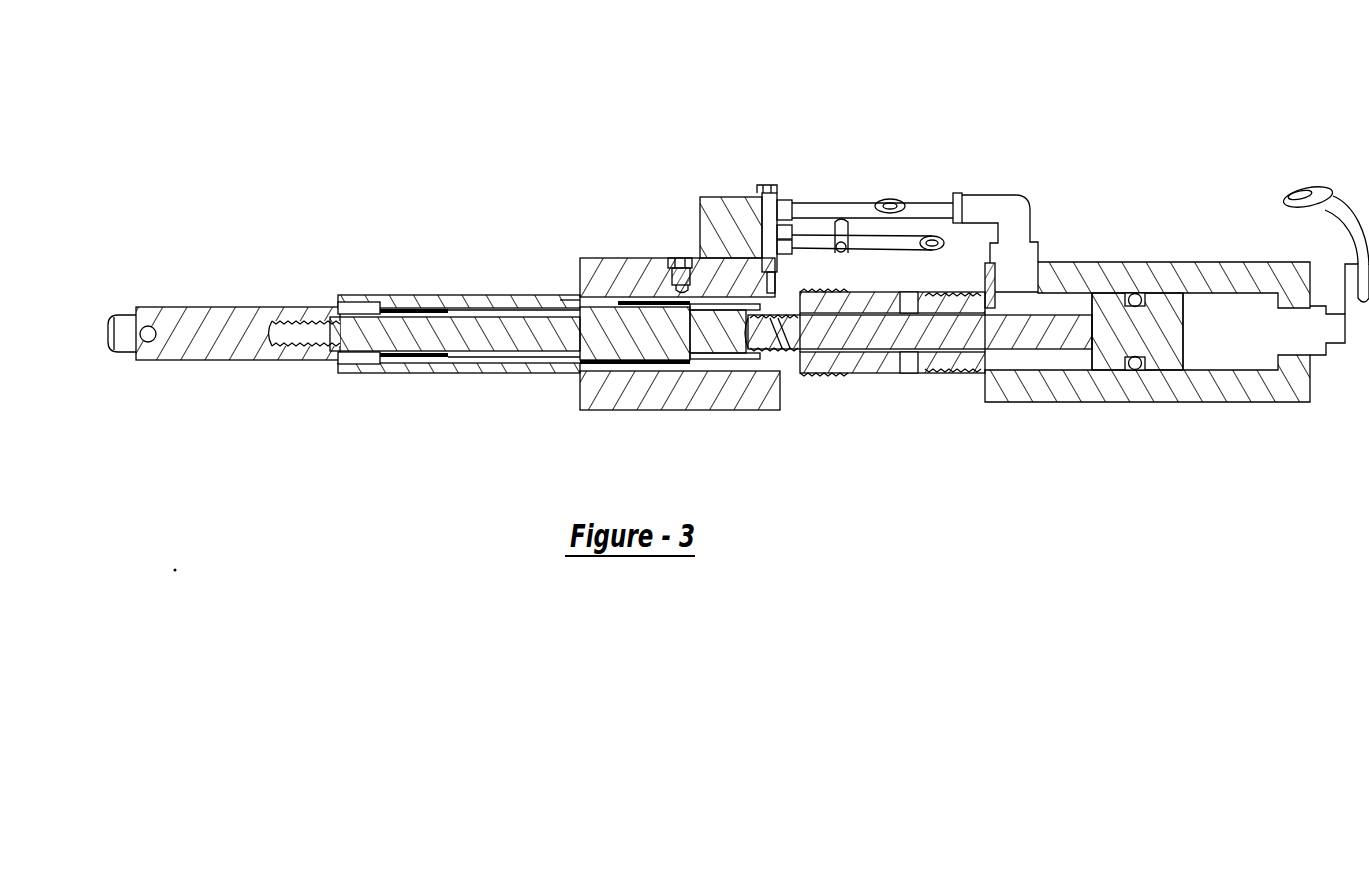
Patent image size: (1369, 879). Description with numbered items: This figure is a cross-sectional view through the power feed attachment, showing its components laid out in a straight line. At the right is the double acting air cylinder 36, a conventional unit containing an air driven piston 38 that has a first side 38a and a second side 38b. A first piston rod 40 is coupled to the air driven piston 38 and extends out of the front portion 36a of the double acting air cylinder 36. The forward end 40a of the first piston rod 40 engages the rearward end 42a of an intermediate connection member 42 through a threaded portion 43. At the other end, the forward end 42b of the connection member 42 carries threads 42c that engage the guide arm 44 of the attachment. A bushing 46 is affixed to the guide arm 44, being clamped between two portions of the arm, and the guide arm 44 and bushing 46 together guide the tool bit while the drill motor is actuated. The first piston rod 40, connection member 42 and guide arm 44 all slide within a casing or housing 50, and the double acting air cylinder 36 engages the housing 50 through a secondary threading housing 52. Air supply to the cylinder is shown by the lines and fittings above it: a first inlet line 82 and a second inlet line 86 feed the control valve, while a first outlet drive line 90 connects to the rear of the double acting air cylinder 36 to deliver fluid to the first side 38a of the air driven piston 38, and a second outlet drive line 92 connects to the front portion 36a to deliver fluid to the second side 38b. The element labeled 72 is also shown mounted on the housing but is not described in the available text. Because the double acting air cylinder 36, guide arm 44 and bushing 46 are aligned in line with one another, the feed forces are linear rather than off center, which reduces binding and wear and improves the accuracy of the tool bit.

The double acting air cylinder 36 is at (1260, 403).
The front portion of double acting air cylinder 36a is at (950, 378).
The air driven piston 38 is at (1170, 300).
The first side of air driven piston 38a is at (1200, 402).
The second side of air driven piston 38b is at (1090, 362).
The first piston rod 40 is at (858, 333).
The forward end of first piston rod 40a is at (808, 350).
The connection member 42 is at (478, 365).
The rearward end of connection member 42a is at (770, 330).
The forward end of connection member 42b is at (357, 325).
The threads 42c is at (292, 346).
The threaded portion 43 is at (782, 322).
The guide arm 44 is at (224, 330).
The bushing 46 is at (121, 312).
The housing 50 is at (487, 305).
The secondary threading housing 52 is at (895, 372).
The sensor housing 72 is at (732, 214).
The first inlet line 82 is at (803, 205).
The second inlet line 86 is at (890, 237).
The first outlet drive line 90 is at (1350, 205).
The second outlet drive line 92 is at (936, 200).